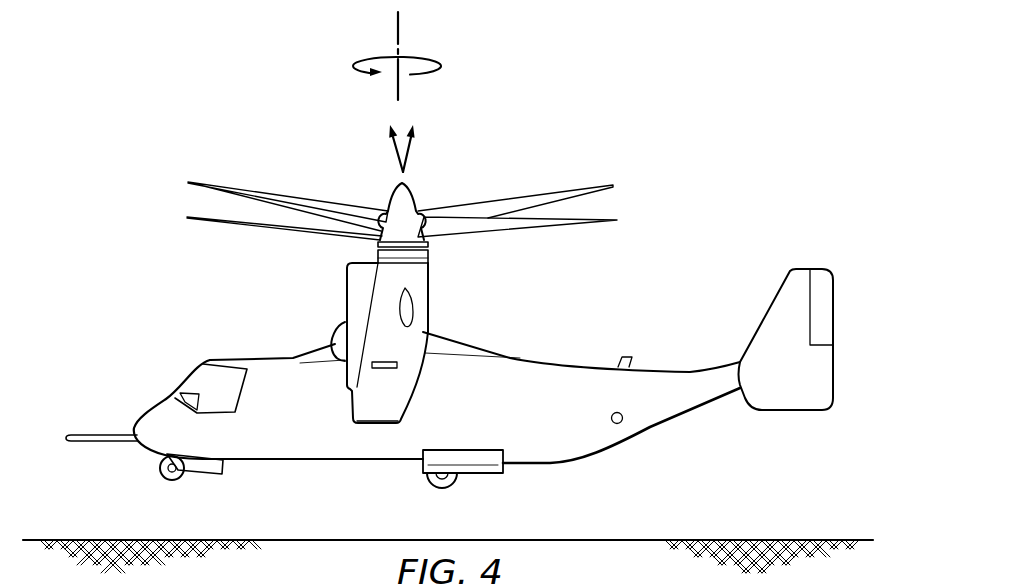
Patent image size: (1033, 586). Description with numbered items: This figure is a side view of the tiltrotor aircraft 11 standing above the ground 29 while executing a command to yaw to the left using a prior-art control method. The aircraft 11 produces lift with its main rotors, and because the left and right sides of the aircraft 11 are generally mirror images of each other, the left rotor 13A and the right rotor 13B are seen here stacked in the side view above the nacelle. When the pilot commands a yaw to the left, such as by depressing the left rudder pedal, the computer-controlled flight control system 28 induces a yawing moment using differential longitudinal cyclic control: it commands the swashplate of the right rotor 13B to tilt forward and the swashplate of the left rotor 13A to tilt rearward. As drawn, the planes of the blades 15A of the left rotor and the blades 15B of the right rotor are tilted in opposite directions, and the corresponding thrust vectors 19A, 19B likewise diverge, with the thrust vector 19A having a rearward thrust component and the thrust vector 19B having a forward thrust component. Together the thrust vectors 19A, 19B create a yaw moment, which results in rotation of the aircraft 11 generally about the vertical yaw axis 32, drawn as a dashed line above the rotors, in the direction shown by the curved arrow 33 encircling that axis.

The tiltrotor aircraft 11 is at (449, 297).
The left rotor 13A is at (383, 190).
The right rotor 13B is at (353, 246).
The blades of left rotor 15A is at (528, 228).
The blades of right rotor 15B is at (567, 192).
The left thrust vector 19A is at (416, 153).
The right thrust vector 19B is at (386, 153).
The flight control system 28 is at (187, 395).
The ground 29 is at (744, 540).
The vertical yaw axis 32 is at (397, 27).
The arrow 33 is at (428, 60).